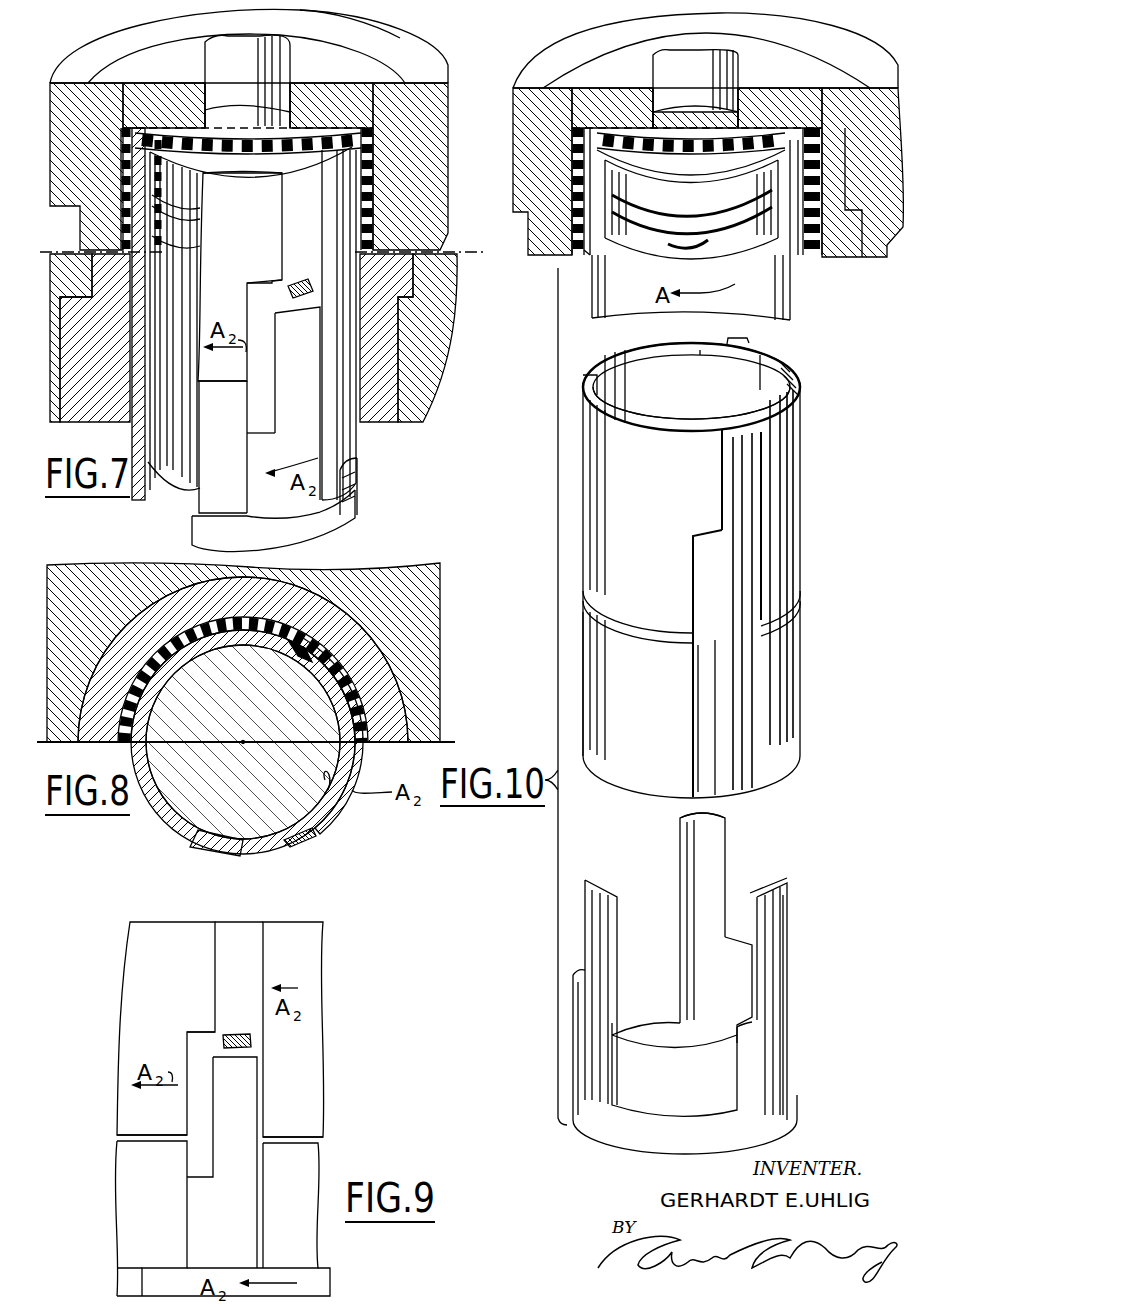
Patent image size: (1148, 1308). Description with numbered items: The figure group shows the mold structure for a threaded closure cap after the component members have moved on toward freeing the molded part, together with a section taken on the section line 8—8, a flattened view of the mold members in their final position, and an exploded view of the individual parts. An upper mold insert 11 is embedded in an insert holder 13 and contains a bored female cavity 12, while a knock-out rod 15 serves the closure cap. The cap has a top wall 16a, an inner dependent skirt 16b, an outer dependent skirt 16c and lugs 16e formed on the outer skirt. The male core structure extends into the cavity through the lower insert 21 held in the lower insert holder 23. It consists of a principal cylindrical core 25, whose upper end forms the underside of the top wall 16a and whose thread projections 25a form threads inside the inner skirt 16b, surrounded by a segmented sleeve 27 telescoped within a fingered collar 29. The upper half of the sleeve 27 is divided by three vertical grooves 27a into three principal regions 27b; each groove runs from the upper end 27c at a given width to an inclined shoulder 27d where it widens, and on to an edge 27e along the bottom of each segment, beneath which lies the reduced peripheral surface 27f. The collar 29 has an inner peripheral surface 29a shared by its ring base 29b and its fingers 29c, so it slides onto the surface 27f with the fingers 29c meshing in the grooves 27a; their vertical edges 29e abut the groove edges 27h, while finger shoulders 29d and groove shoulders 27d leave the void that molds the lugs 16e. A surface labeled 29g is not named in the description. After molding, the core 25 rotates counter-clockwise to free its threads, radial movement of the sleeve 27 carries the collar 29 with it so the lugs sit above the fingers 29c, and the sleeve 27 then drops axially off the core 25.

In FIG. 7, the section line 8 is at (47, 266).
In FIG. 7, the upper mold insert 11 is at (311, 92).
In FIG. 8, the upper mold insert 11 is at (384, 733).
In FIG. 10, the upper mold insert 11 is at (752, 98).
In FIG. 7, the bored female cavity 12 is at (150, 80).
In FIG. 7, the insert holder 13 is at (440, 98).
In FIG. 8, the insert holder 13 is at (366, 566).
In FIG. 10, the insert holder 13 is at (882, 170).
In FIG. 7, the knock-out rod 15 is at (225, 66).
In FIG. 10, the knock-out rod 15 is at (683, 55).
In FIG. 7, the top wall 16a is at (330, 135).
In FIG. 10, the top wall 16a is at (782, 138).
In FIG. 7, the inner dependent skirt 16b is at (163, 143).
In FIG. 10, the inner dependent skirt 16b is at (604, 140).
In FIG. 7, the outer dependent skirt 16c is at (128, 200).
In FIG. 7, the lugs 16e is at (300, 299).
In FIG. 8, the lugs 16e is at (302, 838).
In FIG. 9, the lugs 16e is at (241, 1033).
In FIG. 10, the lugs 16e is at (581, 258).
In FIG. 7, the lower insert 21 is at (365, 420).
In FIG. 7, the lower insert holder 23 is at (420, 385).
In FIG. 8, the principal cylindrical core 25 is at (308, 782).
In FIG. 10, the principal cylindrical core 25 is at (676, 176).
In FIG. 10, the thread projections 25a is at (705, 210).
In FIG. 10, the segmented sleeve 27 is at (790, 671).
In FIG. 7, the vertical grooves 27a is at (296, 188).
In FIG. 8, the vertical grooves 27a is at (262, 852).
In FIG. 9, the vertical grooves 27a is at (233, 916).
In FIG. 10, the vertical grooves 27a is at (590, 386).
In FIG. 7, the principal regions 27b is at (243, 232).
In FIG. 9, the principal regions 27b is at (220, 1029).
In FIG. 10, the principal regions 27b is at (669, 479).
In FIG. 10, the upper end 27c is at (614, 355).
In FIG. 7, the shoulder 27d is at (264, 278).
In FIG. 9, the shoulder 27d is at (190, 1032).
In FIG. 10, the shoulder 27d is at (702, 512).
In FIG. 7, the edge 27e is at (223, 364).
In FIG. 9, the edge 27e is at (186, 1126).
In FIG. 10, the edge 27e is at (612, 598).
In FIG. 7, the reduced peripheral surface 27f is at (238, 496).
In FIG. 9, the reduced peripheral surface 27f is at (175, 1174).
In FIG. 10, the reduced peripheral surface 27f is at (664, 705).
In FIG. 10, the groove edges 27h is at (770, 492).
In FIG. 9, the fingered collar 29 is at (235, 1217).
In FIG. 10, the fingered collar 29 is at (748, 848).
In FIG. 10, the inner peripheral surface 29a is at (700, 846).
In FIG. 7, the ring base 29b is at (210, 538).
In FIG. 9, the ring base 29b is at (167, 1285).
In FIG. 10, the ring base 29b is at (713, 1120).
In FIG. 7, the fingers 29c is at (322, 387).
In FIG. 9, the fingers 29c is at (240, 1097).
In FIG. 10, the fingers 29c is at (714, 865).
In FIG. 7, the finger shoulders 29d is at (270, 442).
In FIG. 10, the finger shoulders 29d is at (745, 1022).
In FIG. 10, the vertical edges 29e is at (788, 933).
In FIG. 10, the sleeve bore 29g is at (688, 387).